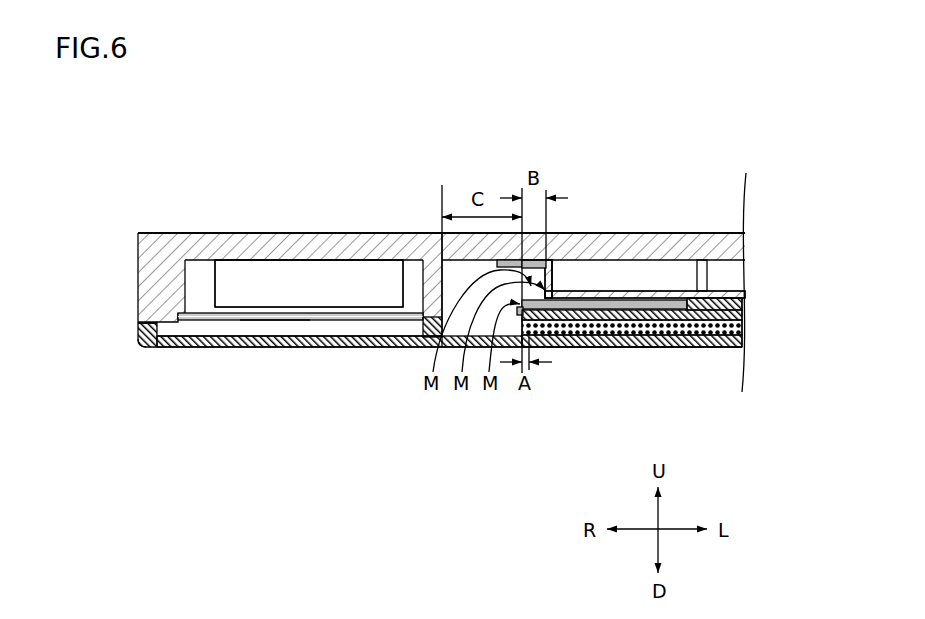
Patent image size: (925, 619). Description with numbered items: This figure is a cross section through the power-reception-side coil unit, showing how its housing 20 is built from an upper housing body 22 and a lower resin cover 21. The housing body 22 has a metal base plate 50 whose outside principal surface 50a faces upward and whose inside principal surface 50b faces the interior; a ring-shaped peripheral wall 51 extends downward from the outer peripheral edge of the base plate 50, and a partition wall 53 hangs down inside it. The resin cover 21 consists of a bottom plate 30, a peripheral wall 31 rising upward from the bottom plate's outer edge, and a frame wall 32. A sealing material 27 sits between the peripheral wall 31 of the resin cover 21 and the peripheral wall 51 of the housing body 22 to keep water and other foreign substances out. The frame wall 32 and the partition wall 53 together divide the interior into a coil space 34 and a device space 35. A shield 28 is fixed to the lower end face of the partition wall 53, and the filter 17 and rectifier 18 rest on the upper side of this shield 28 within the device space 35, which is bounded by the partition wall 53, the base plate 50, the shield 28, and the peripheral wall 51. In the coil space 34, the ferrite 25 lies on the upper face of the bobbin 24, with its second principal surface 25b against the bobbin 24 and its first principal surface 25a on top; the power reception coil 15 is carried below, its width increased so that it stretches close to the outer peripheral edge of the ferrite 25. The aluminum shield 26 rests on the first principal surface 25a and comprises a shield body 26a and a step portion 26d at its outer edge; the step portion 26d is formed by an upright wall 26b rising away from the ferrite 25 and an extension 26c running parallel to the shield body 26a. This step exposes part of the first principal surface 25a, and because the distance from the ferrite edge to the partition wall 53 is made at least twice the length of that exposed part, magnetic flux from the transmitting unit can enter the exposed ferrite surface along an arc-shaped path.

The power reception coil 15 is at (718, 345).
The filter 17 is at (340, 273).
The rectifier 18 is at (309, 283).
The housing 20 is at (441, 290).
The resin cover 21 is at (215, 395).
The housing body 22 is at (267, 233).
The bobbin 24 is at (735, 311).
The ferrite 25 is at (683, 341).
The first principal surface 25a is at (615, 327).
The second principal surface 25b is at (570, 315).
The shield 26 is at (700, 108).
The shield body 26a is at (677, 290).
The upright wall 26b is at (567, 290).
The extension 26c is at (535, 262).
The step portion 26d is at (643, 148).
The sealing material 27 is at (140, 329).
The shield 28 is at (310, 321).
The bottom plate 30 is at (208, 348).
The peripheral wall 31 is at (155, 348).
The frame wall 32 is at (433, 328).
The coil space 34 is at (652, 339).
The device space 35 is at (273, 322).
The base plate 50 is at (227, 250).
The outside principal surface 50a is at (203, 230).
The inside principal surface 50b is at (192, 267).
The peripheral wall 51 is at (150, 277).
The partition wall 53 is at (433, 277).